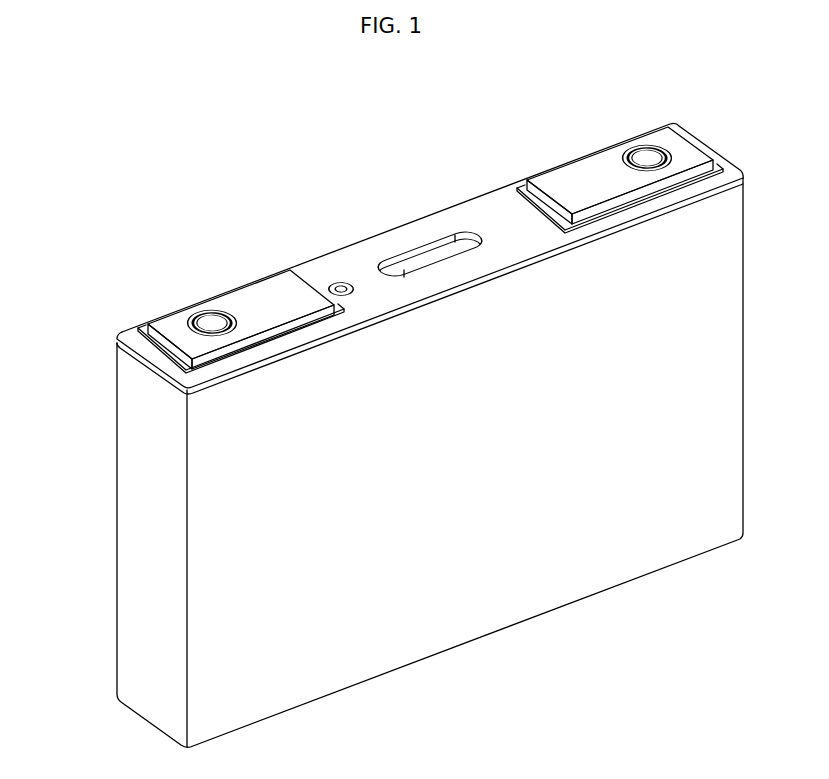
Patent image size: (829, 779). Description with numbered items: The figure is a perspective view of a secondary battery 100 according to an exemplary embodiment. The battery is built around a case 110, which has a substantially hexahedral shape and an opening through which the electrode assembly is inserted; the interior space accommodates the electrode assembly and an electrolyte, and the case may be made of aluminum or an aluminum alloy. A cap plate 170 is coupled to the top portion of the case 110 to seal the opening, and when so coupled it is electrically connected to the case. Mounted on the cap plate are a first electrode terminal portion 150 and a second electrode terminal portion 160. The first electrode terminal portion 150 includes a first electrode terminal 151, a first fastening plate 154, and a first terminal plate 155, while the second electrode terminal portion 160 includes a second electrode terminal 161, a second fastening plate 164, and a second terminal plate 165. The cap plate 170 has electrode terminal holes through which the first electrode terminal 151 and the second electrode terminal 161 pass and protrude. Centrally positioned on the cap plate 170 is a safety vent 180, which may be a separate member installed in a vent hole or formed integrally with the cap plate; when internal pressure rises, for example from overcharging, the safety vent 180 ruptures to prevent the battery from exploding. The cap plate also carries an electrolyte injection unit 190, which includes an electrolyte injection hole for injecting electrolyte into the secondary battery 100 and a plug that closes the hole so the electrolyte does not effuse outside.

The secondary battery 100 is at (50, 89).
The case 110 is at (130, 497).
The first electrode terminal portion 150 is at (150, 293).
The first electrode terminal 151 is at (217, 320).
The first fastening plate 154 is at (142, 327).
The first terminal plate 155 is at (263, 285).
The second electrode terminal portion 160 is at (535, 156).
The second electrode terminal 161 is at (647, 152).
The second fastening plate 164 is at (714, 171).
The second terminal plate 165 is at (600, 158).
The cap plate 170 is at (485, 208).
The safety vent 180 is at (437, 248).
The electrolyte injection unit 190 is at (340, 285).